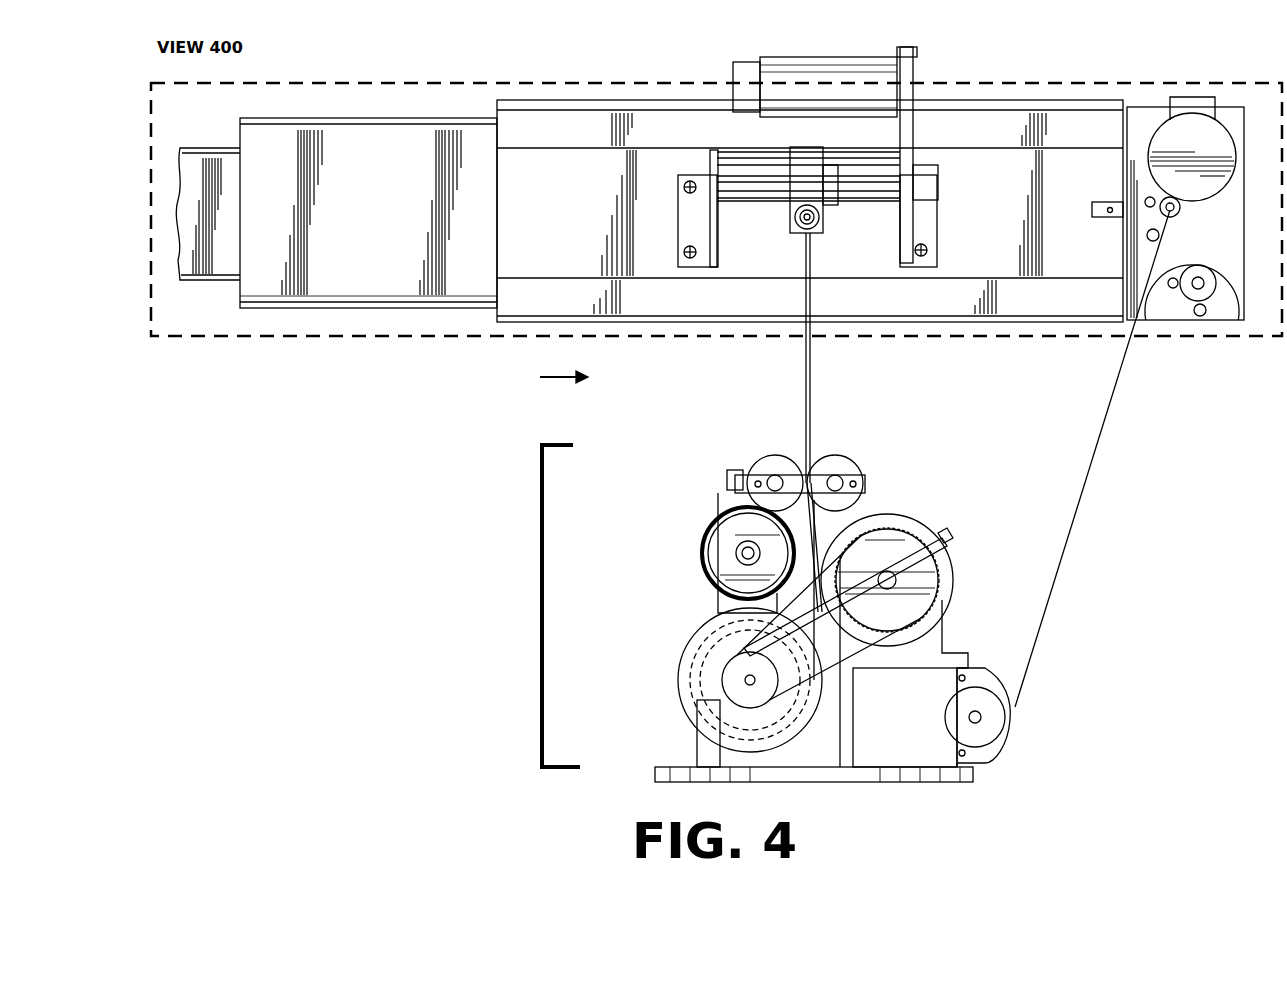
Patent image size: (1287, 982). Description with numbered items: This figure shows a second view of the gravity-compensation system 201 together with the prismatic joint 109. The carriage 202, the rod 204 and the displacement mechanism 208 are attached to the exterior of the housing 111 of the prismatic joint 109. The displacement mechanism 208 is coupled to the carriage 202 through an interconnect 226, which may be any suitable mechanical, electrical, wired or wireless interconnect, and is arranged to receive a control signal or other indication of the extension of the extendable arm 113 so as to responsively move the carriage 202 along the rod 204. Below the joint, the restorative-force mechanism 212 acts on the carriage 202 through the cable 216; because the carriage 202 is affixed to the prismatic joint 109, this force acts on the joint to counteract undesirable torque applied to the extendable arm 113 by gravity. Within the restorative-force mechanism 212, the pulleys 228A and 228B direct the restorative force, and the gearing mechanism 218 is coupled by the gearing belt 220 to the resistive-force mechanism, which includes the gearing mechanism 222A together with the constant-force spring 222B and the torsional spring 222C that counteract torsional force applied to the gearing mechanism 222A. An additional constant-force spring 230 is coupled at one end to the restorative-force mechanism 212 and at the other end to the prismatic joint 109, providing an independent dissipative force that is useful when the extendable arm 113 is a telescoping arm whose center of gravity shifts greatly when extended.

The prismatic joint 109 is at (282, 337).
The extendable arm 113 is at (240, 135).
The housing 111 is at (493, 112).
The displacement mechanism 208 is at (750, 90).
The interconnect 226 is at (920, 130).
The rod 204 is at (740, 200).
The carriage 202 is at (815, 230).
The gravity-compensation system 201 is at (545, 378).
The cable 216 is at (812, 383).
The pulley 228A is at (768, 452).
The pulley 228B is at (842, 452).
The constant-force spring 230 is at (1090, 497).
The constant-force spring 222B is at (698, 547).
The gearing mechanism 218 is at (953, 587).
The gearing mechanism 222A is at (680, 647).
The torsional spring 222C is at (717, 710).
The gearing belt 220 is at (853, 682).
The restorative-force mechanism 212 is at (542, 708).